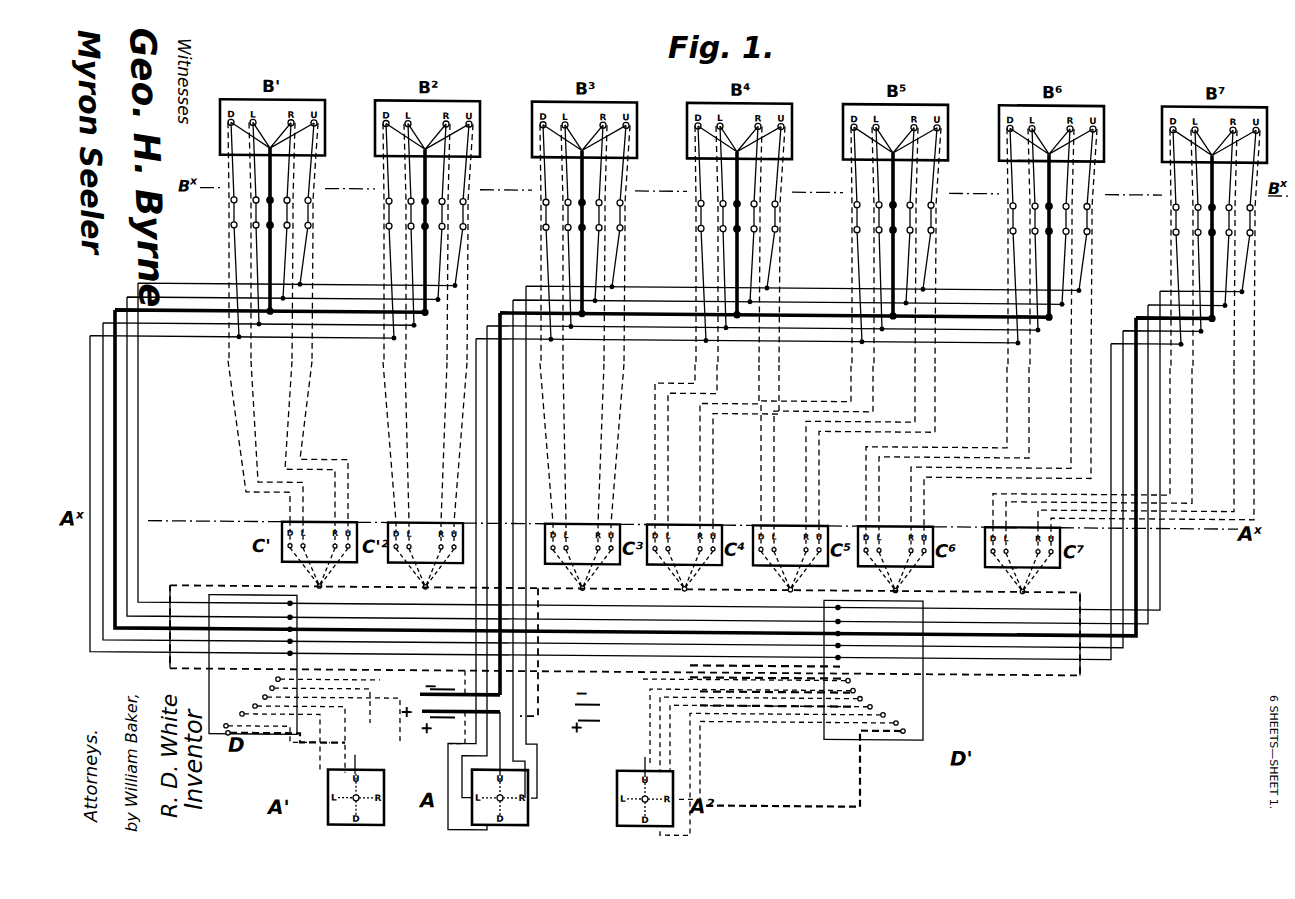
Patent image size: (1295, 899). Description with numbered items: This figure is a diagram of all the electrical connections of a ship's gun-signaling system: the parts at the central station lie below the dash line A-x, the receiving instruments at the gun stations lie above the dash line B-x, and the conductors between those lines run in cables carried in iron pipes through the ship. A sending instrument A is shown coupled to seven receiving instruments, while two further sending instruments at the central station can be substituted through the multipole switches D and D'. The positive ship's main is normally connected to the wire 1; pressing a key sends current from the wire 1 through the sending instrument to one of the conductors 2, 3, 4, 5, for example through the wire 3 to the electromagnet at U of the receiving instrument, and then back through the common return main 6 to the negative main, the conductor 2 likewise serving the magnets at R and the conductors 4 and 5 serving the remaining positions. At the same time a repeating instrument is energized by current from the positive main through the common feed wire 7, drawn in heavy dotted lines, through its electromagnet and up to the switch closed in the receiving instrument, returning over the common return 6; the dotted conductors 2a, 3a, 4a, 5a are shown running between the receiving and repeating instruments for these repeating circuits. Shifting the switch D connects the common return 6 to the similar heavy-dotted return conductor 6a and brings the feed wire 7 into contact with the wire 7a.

The wire 1 is at (500, 611).
The conductor 2 is at (676, 506).
The wire 3 is at (690, 482).
The conductor 4 is at (652, 471).
The wire 5 is at (635, 517).
The common return main 6 is at (642, 438).
The common feed wire 7 is at (626, 656).
The branch conductor 2a is at (728, 376).
The branch conductor 3a is at (740, 328).
The branch conductor 4a is at (714, 323).
The branch conductor 5a is at (724, 326).
The return conductor 6a is at (561, 746).
The wire 7a is at (571, 753).